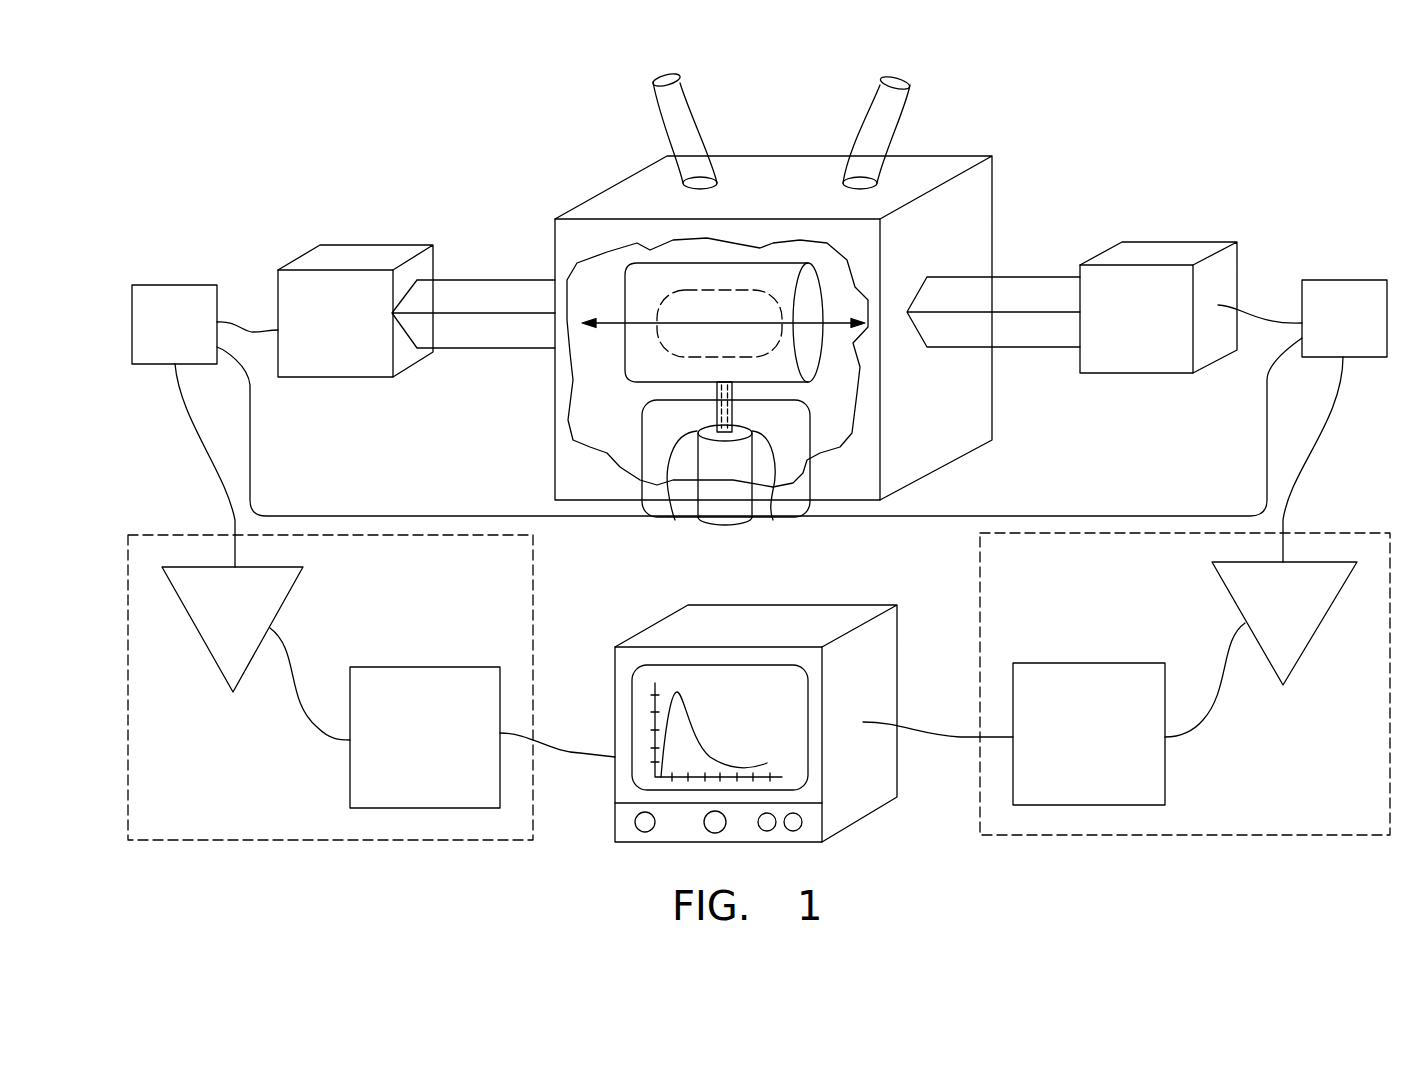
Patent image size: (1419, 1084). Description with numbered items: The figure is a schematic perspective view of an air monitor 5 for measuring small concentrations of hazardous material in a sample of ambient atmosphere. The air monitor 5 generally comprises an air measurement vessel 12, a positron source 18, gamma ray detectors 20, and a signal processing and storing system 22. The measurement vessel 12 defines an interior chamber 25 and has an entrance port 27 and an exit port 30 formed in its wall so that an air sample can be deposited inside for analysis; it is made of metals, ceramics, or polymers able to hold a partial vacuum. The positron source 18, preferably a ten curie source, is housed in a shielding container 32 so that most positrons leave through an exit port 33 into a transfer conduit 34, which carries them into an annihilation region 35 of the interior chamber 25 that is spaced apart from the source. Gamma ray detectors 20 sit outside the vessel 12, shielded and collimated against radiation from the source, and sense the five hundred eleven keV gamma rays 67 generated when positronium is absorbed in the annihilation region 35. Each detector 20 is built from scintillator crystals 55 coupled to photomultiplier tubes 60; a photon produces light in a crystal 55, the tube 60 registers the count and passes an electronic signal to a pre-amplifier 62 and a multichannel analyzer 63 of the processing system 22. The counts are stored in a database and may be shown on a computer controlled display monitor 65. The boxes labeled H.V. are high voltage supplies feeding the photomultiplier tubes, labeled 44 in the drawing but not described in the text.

The air monitor 5 is at (811, 279).
The air measurement vessel 12 is at (960, 158).
The exit port 30 is at (690, 122).
The entrance port 27 is at (870, 120).
The annihilation region 35 is at (688, 290).
The interior chamber 25 is at (740, 262).
The gamma rays 67 is at (623, 380).
The container 32 is at (707, 513).
The exit port 33 is at (668, 505).
The transfer conduit 34 is at (773, 503).
The positron source 18 is at (744, 536).
The scintillator crystals 55 is at (485, 333).
The gamma ray detectors 20 is at (474, 252).
The photomultiplier tubes 60 is at (348, 247).
The high voltage supply 44 is at (163, 285).
The signal processing and storing system 22 is at (759, 718).
The pre-amplifier 62 is at (200, 635).
The multichannel analyzer 63 is at (403, 667).
The display monitor 65 is at (827, 612).